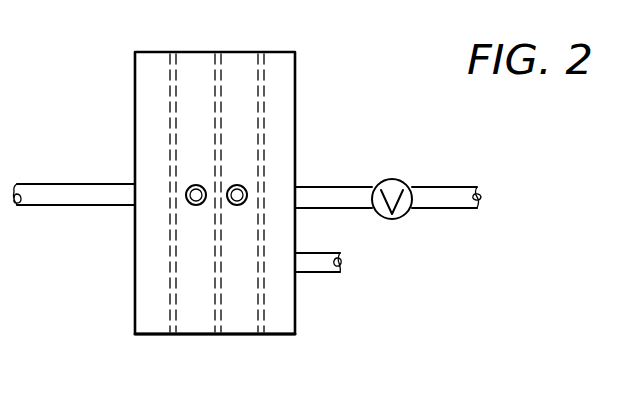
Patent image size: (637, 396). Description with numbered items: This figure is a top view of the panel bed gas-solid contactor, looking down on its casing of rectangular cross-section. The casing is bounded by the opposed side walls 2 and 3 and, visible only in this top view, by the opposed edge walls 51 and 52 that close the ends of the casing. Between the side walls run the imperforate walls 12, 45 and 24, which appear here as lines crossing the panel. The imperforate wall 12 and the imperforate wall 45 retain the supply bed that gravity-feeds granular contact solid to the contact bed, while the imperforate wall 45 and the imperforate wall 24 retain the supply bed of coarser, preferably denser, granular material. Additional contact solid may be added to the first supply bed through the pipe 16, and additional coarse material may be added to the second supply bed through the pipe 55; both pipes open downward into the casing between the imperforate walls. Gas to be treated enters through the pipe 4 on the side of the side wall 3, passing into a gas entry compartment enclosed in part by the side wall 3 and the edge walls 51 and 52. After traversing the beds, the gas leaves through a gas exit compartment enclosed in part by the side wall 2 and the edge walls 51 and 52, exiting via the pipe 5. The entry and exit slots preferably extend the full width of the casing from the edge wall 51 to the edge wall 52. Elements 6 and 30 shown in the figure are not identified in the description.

The side wall 2 is at (296, 328).
The side wall 3 is at (133, 298).
The pipe 4 is at (58, 183).
The pipe 5 is at (340, 192).
The valve 6 is at (396, 181).
The imperforate wall 12 is at (168, 87).
The pipe 16 is at (196, 185).
The imperforate wall 24 is at (265, 99).
The side port conduit 30 is at (327, 263).
The imperforate wall 45 is at (226, 67).
The edge wall 51 is at (207, 52).
The edge wall 52 is at (197, 335).
The pipe 55 is at (237, 185).